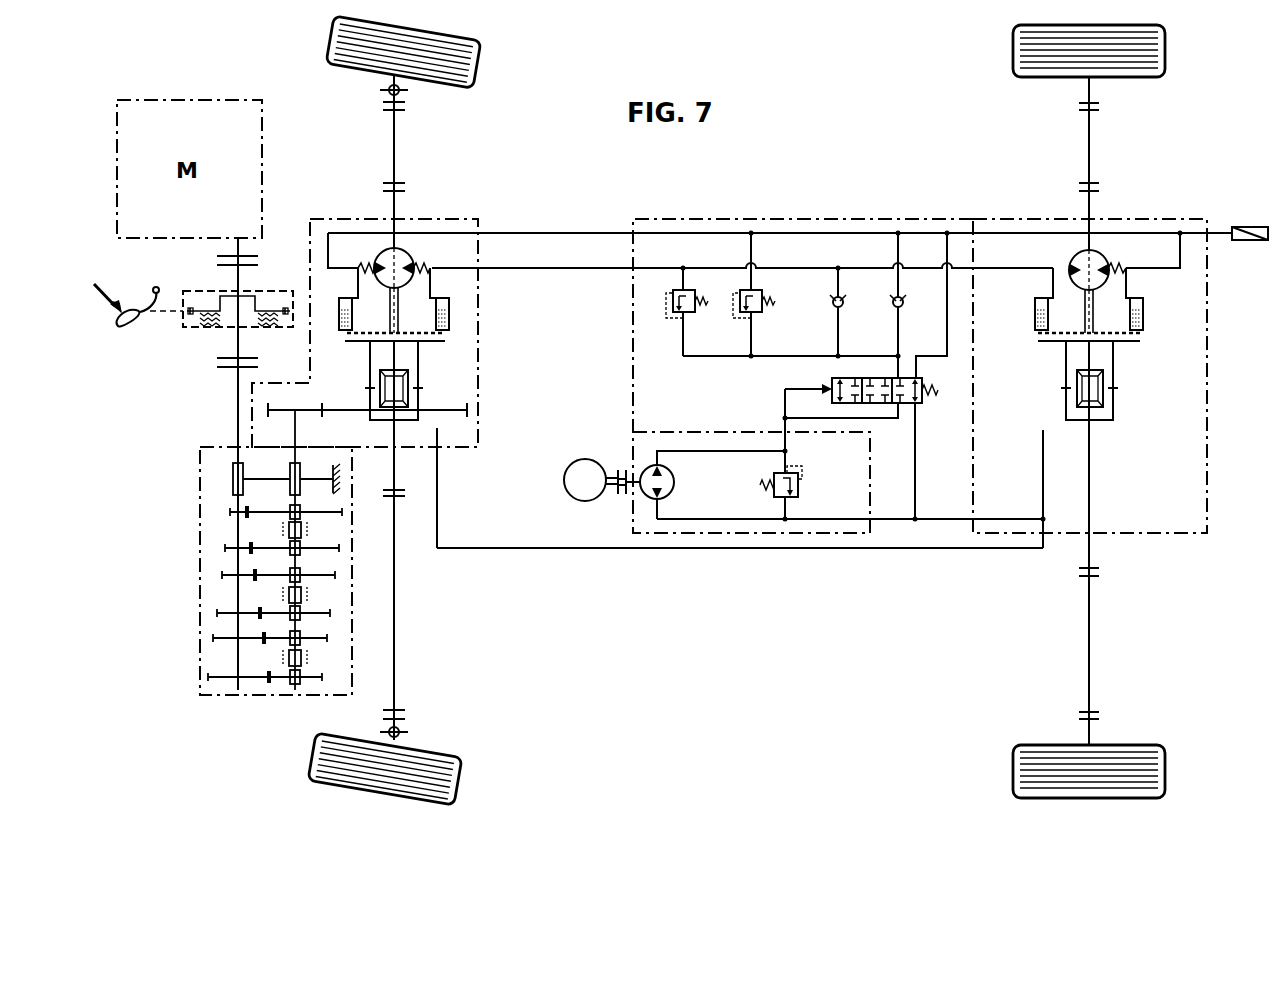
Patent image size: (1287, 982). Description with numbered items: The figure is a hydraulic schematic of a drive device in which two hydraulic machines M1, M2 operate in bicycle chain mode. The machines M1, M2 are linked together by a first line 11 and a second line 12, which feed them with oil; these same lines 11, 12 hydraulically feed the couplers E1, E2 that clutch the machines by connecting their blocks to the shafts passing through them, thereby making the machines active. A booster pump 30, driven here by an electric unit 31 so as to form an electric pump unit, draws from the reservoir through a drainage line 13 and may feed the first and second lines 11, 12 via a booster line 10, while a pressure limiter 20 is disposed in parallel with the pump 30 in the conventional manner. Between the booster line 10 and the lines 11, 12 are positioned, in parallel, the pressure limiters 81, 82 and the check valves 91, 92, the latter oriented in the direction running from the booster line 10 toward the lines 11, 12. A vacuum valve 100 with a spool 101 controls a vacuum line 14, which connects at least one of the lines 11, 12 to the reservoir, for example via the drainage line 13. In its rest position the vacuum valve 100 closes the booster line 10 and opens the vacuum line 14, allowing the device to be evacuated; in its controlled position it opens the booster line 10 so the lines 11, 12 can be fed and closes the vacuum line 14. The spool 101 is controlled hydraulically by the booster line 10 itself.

The booster line 10 is at (785, 405).
The first line 11 is at (550, 268).
The second line 12 is at (552, 233).
The drainage line 13 is at (745, 550).
The vacuum line 14 is at (947, 320).
The pressure limiter 20 is at (801, 474).
The booster pump 30 is at (675, 483).
The electric unit 31 is at (585, 459).
The pressure limiter 81 is at (676, 313).
The pressure limiter 82 is at (743, 313).
The check valve 91 is at (833, 306).
The check valve 92 is at (893, 306).
The vacuum valve 100 is at (905, 414).
The spool 101 is at (825, 388).
The hydraulic machine M1 is at (408, 254).
The hydraulic machine M2 is at (1104, 250).
The coupler E1 is at (340, 334).
The coupler E2 is at (1036, 334).